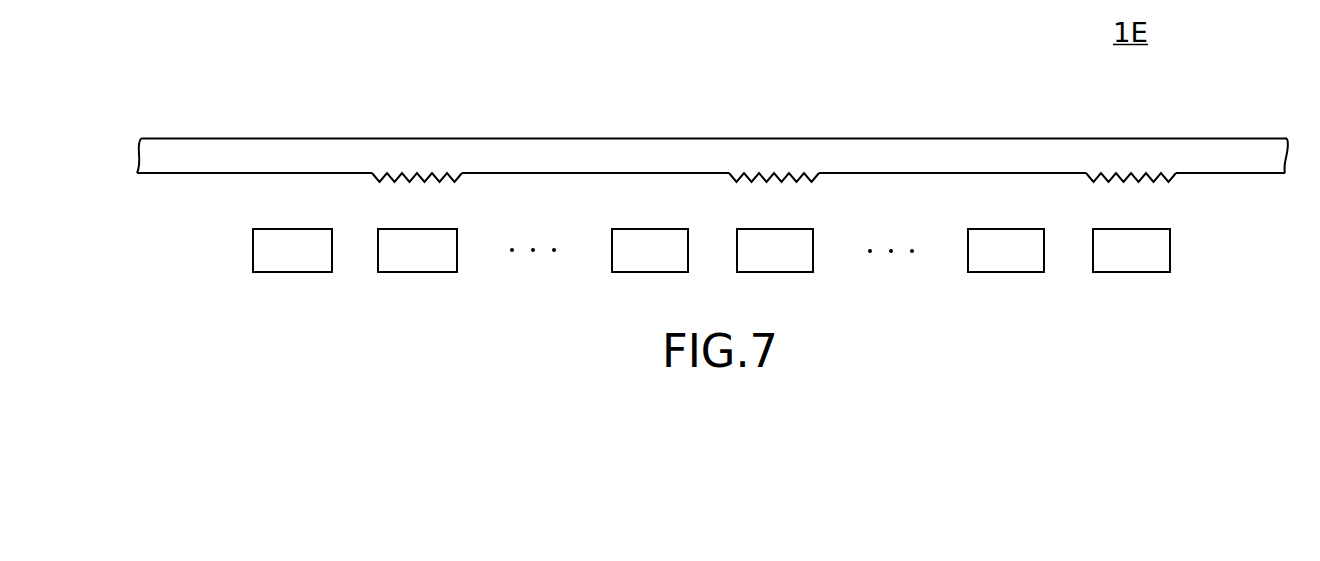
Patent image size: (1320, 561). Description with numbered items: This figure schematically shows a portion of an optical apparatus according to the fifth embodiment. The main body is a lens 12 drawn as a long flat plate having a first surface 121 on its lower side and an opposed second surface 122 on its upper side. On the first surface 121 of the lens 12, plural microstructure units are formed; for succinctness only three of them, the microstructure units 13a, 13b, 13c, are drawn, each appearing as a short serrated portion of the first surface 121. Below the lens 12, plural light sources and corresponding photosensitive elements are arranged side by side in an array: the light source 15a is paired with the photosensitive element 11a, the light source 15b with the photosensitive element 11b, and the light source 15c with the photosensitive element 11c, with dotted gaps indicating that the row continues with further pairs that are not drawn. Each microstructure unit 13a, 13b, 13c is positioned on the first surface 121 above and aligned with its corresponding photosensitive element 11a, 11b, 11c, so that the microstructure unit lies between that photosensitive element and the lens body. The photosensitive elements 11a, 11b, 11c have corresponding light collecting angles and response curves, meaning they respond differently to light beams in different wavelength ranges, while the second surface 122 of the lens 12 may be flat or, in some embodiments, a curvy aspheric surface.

The lens 12 is at (719, 163).
The first surface 121 is at (1253, 175).
The second surface 122 is at (1210, 137).
The microstructure unit 13a is at (398, 183).
The microstructure unit 13b is at (755, 185).
The microstructure unit 13c is at (1113, 183).
The light source 15a is at (300, 243).
The light source 15b is at (655, 243).
The light source 15c is at (1008, 243).
The photosensitive element 11a is at (428, 243).
The photosensitive element 11b is at (785, 243).
The photosensitive element 11c is at (1142, 243).